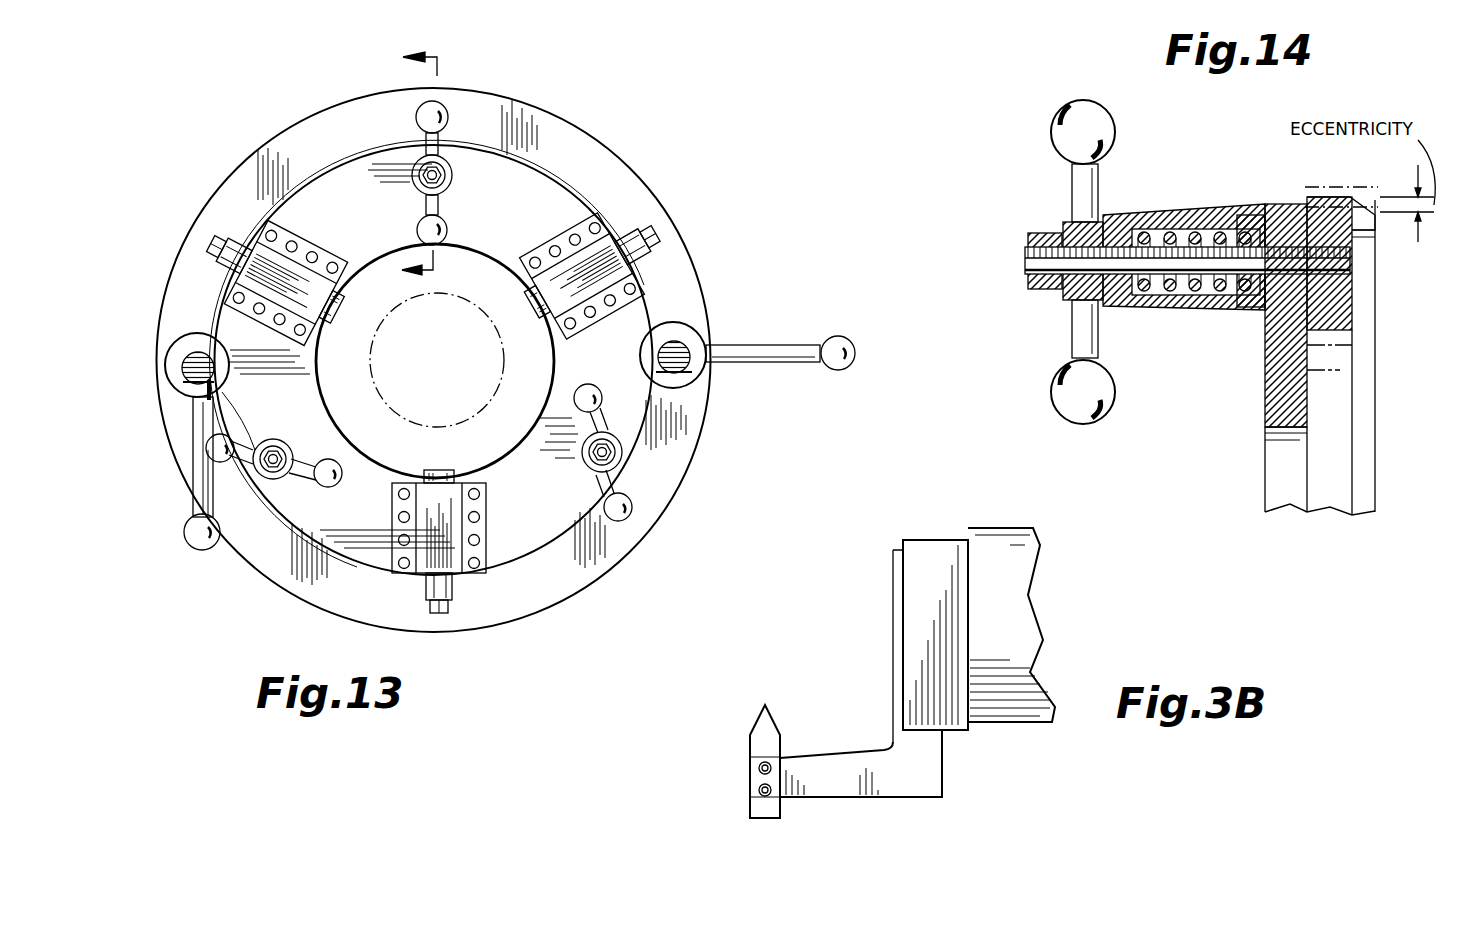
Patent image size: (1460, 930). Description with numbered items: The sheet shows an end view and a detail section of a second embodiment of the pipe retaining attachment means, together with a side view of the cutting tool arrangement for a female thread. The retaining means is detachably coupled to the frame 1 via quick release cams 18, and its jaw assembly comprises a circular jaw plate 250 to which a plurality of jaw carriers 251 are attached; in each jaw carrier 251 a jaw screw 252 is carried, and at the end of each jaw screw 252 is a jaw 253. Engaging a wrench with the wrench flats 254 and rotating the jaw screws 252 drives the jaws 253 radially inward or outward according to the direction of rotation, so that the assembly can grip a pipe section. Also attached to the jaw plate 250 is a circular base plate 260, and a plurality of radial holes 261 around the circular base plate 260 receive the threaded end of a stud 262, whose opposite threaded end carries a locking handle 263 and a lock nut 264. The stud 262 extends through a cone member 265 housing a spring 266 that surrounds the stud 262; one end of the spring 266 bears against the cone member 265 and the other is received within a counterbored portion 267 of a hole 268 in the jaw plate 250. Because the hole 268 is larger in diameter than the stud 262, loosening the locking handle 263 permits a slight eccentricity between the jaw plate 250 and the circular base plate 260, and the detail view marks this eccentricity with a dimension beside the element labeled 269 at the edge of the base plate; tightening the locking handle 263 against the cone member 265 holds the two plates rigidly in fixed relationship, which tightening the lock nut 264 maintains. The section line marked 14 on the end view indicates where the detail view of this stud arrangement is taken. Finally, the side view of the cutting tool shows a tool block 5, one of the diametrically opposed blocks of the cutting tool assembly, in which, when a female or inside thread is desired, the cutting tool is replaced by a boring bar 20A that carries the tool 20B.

In FIG. 13, the frame 1 is at (397, 300).
In FIG. 3B, the tool block 5 is at (937, 545).
In FIG. 13, the section line of FIG. 14 is at (436, 164).
In FIG. 13, the quick release cam 18 is at (200, 508).
In FIG. 3B, the boring bar 20A is at (845, 755).
In FIG. 3B, the tool 20B is at (765, 708).
In FIG. 13, the jaw plate 250 is at (555, 190).
In FIG. 14, the jaw plate 250 is at (1268, 422).
In FIG. 13, the jaw carrier 251 is at (305, 268).
In FIG. 13, the jaw screw 252 is at (240, 238).
In FIG. 13, the jaw 253 is at (334, 325).
In FIG. 13, the wrench flats 254 is at (215, 245).
In FIG. 14, the circular base plate 260 is at (1352, 320).
In FIG. 14, the radial hole 261 is at (1355, 268).
In FIG. 14, the stud 262 is at (1208, 250).
In FIG. 13, the locking handle 263 is at (438, 208).
In FIG. 14, the locking handle 263 is at (1082, 195).
In FIG. 13, the lock nut 264 is at (452, 165).
In FIG. 14, the lock nut 264 is at (1042, 295).
In FIG. 13, the cone member 265 is at (412, 165).
In FIG. 14, the cone member 265 is at (1150, 222).
In FIG. 14, the spring 266 is at (1182, 312).
In FIG. 14, the counterbored portion 267 is at (1253, 312).
In FIG. 14, the hole 268 is at (1272, 350).
In FIG. 14, the eccentric seat 269 is at (1375, 222).